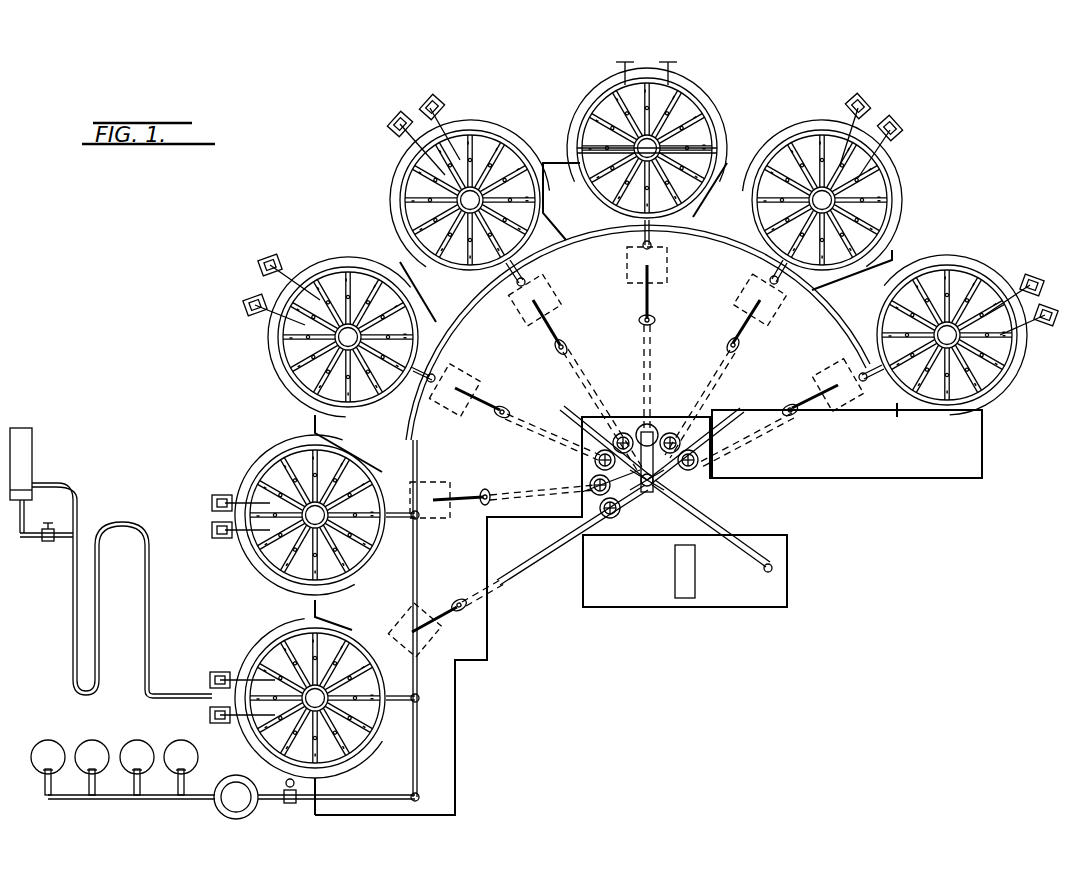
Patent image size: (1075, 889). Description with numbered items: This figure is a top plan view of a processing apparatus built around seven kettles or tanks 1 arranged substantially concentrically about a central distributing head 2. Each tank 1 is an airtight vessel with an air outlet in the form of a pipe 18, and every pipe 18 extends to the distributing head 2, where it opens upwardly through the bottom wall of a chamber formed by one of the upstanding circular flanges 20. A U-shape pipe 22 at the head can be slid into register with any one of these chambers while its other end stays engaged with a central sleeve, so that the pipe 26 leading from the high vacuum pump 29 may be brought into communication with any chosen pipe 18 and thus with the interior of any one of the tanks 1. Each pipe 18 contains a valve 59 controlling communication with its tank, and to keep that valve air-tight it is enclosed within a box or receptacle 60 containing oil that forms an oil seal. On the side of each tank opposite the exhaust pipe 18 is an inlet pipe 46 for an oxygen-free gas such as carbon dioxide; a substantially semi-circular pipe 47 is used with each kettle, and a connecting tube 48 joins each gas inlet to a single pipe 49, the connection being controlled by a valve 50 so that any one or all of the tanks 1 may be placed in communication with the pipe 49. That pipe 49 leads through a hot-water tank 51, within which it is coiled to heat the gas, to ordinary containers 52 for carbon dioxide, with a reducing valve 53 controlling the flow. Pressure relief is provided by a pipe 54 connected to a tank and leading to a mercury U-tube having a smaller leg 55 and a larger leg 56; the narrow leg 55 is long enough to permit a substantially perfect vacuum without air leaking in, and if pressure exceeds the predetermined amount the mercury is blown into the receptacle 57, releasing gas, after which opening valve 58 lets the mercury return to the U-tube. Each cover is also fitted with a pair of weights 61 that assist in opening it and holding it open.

The kettles or tanks 1 is at (497, 152).
The distributing head 2 is at (665, 482).
The air outlet pipe 18 is at (652, 372).
The upstanding circular flanges 20 is at (622, 432).
The U-shape pipe 22 is at (657, 432).
The pipe 26 is at (722, 530).
The high vacuum pump 29 is at (733, 592).
The inlet pipe 46 is at (448, 126).
The semi-circular pipe 47 is at (400, 188).
The connecting tube 48 is at (530, 268).
The pipe 49 is at (690, 262).
The valve 50 is at (660, 228).
The hot-water tank 51 is at (245, 775).
The containers 52 is at (50, 742).
The reducing valve 53 is at (288, 805).
The pipe 54 is at (155, 688).
The leg 55 is at (100, 592).
The leg 56 is at (72, 612).
The receptacle 57 is at (25, 462).
The valve 58 is at (46, 542).
The valve 59 is at (558, 354).
The box or receptacle 60 is at (440, 640).
The weights 61 is at (868, 108).